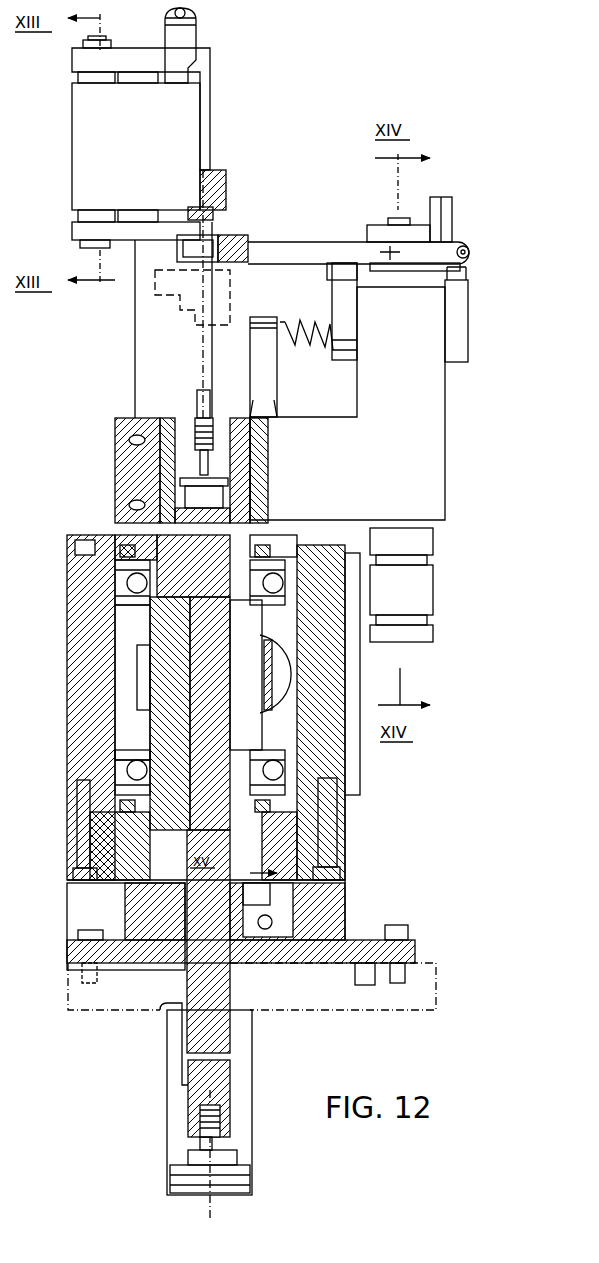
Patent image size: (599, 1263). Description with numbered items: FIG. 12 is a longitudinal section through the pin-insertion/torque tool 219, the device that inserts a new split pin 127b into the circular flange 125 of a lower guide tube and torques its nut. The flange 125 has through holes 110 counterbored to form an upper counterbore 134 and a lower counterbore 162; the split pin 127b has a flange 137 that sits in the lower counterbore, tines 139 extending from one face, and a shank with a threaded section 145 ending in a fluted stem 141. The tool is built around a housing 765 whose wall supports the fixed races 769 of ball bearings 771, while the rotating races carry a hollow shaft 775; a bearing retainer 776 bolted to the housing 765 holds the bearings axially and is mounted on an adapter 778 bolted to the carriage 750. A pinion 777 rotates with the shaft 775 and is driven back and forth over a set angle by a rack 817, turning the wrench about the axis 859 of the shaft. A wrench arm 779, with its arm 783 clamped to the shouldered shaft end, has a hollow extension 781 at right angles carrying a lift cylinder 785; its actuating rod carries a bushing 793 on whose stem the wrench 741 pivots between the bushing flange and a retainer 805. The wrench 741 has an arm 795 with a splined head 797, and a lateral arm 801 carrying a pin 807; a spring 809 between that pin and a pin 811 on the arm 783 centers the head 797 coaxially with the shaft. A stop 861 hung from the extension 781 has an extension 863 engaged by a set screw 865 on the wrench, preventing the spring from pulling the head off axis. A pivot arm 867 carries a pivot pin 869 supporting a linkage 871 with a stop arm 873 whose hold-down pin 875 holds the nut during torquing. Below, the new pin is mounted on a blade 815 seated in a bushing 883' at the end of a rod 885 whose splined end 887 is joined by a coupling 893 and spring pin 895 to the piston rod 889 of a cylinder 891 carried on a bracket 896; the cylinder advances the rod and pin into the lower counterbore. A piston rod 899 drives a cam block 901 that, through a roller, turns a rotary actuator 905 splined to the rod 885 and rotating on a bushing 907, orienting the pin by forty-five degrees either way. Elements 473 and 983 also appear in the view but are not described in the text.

The through holes 110 is at (155, 300).
The circular flange 125 is at (160, 318).
The split pin 127b is at (192, 458).
The upper counterbore 134 is at (168, 268).
The flange 137 is at (175, 478).
The tines 139 is at (250, 510).
The stem 141 is at (197, 405).
The threaded section 145 is at (213, 435).
The lower counterbore 162 is at (182, 335).
The pin-insertion/torque tool 219 is at (147, 1066).
The cover plate 473 is at (118, 540).
The wrench 741 is at (300, 233).
The carriage 750 is at (112, 992).
The housing 765 is at (330, 768).
The fixed races 769 is at (280, 560).
The ball bearings 771 is at (300, 772).
The hollow shaft 775 is at (145, 618).
The bearing retainer 776 is at (105, 820).
The pinion 777 is at (140, 673).
The adapter 778 is at (410, 955).
The wrench arm 779 is at (448, 500).
The hollow extension 781 is at (420, 373).
The arm 783 is at (352, 432).
The lift cylinder 785 is at (415, 590).
The bushing 793 is at (376, 285).
The arm 795 is at (306, 247).
The splined head 797 is at (228, 238).
The arm 801 is at (390, 250).
The retainer 805 is at (376, 228).
The pin 807 is at (330, 298).
The spring 809 is at (300, 352).
The pin 811 is at (255, 358).
The blade 815 is at (245, 482).
The rack 817 is at (282, 688).
The axis 859 is at (210, 1210).
The stop 861 is at (458, 312).
The extension 863 is at (450, 195).
The set screw 865 is at (468, 252).
The pivot arm 867 is at (78, 237).
The pivot pin 869 is at (103, 42).
The linkage 871 is at (163, 188).
The stop arm 873 is at (220, 172).
The hold-down pin 875 is at (196, 210).
The bushing 883' is at (317, 655).
The rod 885 is at (195, 730).
The splined end 887 is at (205, 1022).
The piston rod 889 is at (200, 1148).
The cylinder 891 is at (175, 1185).
The coupling 893 is at (230, 1095).
The spring pin 895 is at (220, 1120).
The bracket 896 is at (170, 1101).
The piston rod 899 is at (270, 928).
The cam block 901 is at (285, 912).
The rotary actuator 905 is at (270, 848).
The bushing 907 is at (110, 883).
The valve body 983 is at (125, 428).